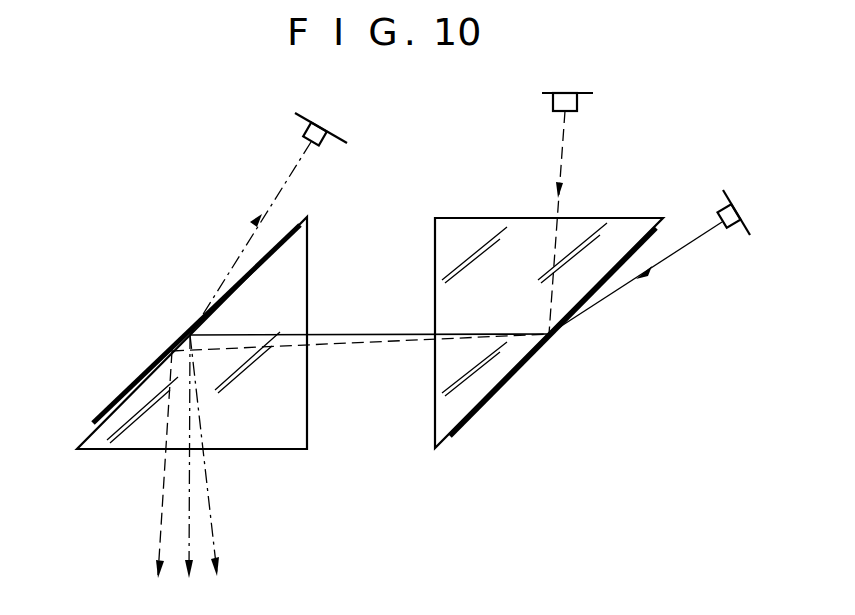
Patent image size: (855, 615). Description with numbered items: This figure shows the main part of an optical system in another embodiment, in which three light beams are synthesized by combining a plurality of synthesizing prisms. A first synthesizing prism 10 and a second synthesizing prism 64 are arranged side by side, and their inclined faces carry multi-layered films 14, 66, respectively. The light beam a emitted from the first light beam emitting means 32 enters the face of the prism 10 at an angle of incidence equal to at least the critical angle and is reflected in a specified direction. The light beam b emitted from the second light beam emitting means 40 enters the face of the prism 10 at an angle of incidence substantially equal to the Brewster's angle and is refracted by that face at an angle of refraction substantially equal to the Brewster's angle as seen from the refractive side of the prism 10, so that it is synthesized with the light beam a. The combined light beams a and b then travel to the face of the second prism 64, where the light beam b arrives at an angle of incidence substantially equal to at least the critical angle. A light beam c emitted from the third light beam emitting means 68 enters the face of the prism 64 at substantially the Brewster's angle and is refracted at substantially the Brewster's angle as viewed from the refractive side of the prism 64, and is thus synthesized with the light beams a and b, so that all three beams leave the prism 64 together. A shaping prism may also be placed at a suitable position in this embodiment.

The first synthesizing prism 10 is at (482, 226).
The multi-layered film 14 is at (517, 370).
The first light beam emitting means 32 is at (578, 101).
The second light beam emitting means 40 is at (727, 211).
The second synthesizing prism 64 is at (298, 270).
The multi-layered film 66 is at (132, 391).
The third light beam emitting means 68 is at (328, 143).
The light beam a is at (562, 168).
The light beam b is at (686, 248).
The light beam c is at (293, 167).